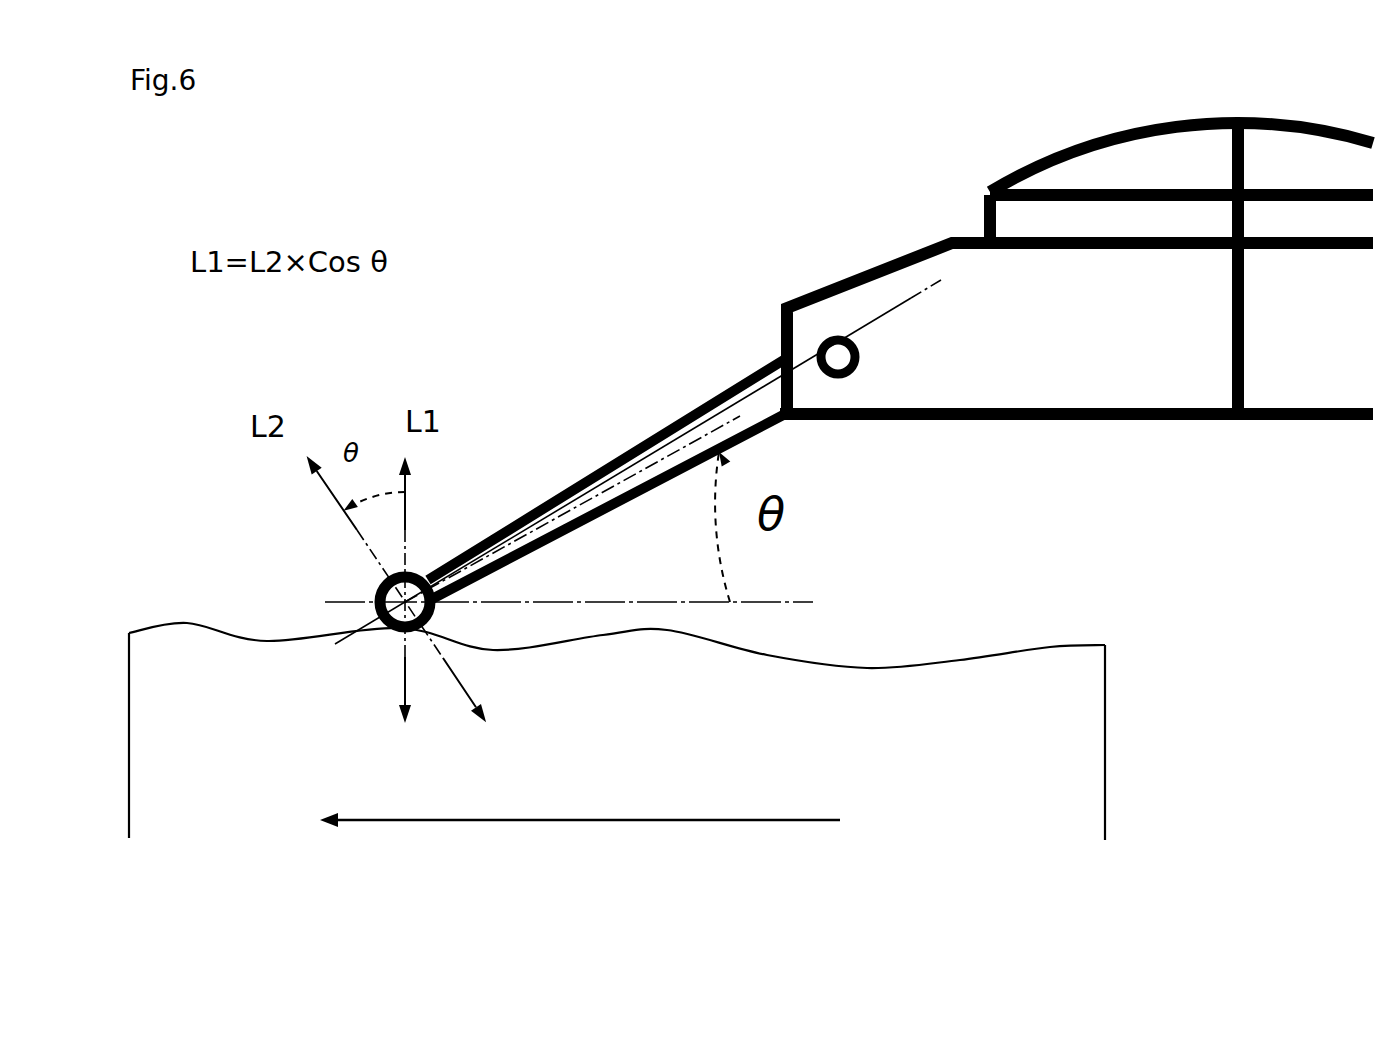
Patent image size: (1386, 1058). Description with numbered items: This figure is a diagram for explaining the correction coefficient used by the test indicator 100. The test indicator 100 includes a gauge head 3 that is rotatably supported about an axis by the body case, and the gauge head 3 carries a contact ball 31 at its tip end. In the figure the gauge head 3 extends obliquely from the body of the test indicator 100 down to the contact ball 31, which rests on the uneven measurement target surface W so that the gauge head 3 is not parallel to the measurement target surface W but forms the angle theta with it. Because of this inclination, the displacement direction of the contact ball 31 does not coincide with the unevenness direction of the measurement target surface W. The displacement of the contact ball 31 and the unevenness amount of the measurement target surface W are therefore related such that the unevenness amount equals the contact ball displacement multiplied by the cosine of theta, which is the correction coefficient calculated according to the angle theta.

The test indicator 100 is at (868, 298).
The gauge head 3 is at (648, 428).
The contact ball 31 is at (388, 630).
The measurement target surface W is at (180, 630).